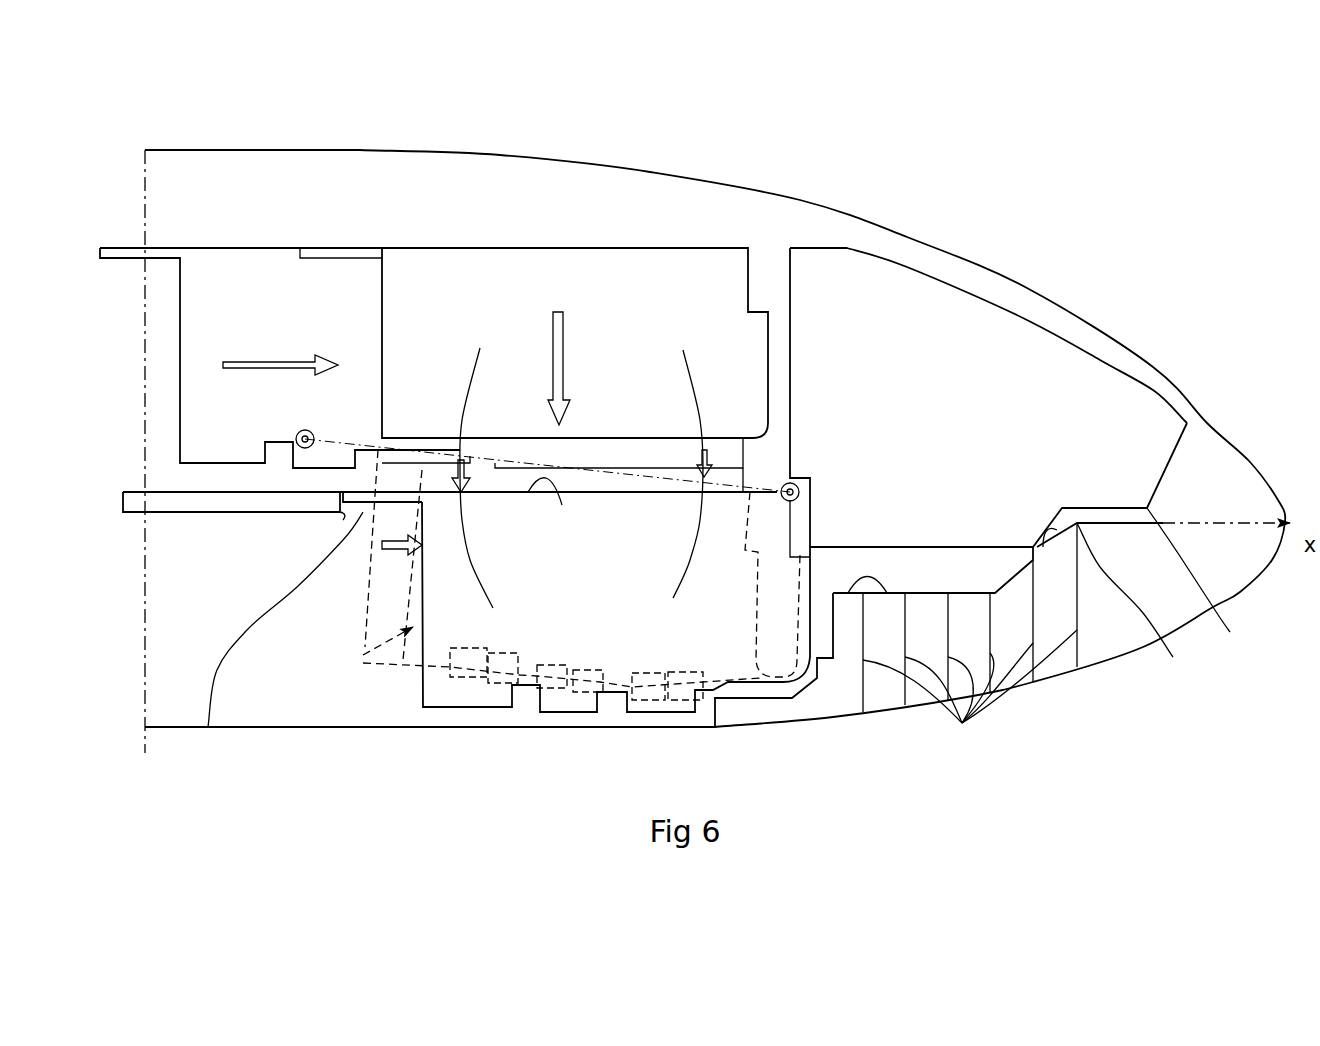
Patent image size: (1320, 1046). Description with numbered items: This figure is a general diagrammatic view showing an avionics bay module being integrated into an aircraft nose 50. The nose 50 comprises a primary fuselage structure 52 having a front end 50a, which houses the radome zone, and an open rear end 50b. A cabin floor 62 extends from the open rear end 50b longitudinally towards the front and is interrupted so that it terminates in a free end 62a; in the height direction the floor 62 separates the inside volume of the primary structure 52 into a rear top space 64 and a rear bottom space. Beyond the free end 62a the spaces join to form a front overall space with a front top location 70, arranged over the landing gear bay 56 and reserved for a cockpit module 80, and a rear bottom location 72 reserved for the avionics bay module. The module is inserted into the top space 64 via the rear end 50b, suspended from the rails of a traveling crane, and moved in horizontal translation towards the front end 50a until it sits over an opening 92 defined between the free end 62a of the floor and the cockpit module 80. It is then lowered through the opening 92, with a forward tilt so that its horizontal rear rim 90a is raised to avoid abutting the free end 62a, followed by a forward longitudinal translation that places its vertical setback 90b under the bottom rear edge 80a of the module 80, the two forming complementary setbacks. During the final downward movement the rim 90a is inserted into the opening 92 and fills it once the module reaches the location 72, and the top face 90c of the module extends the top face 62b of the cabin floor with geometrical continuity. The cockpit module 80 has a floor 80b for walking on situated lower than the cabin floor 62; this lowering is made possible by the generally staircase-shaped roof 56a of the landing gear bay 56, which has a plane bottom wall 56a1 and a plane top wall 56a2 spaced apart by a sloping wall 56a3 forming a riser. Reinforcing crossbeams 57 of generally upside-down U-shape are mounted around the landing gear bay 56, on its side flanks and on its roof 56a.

The aircraft nose 50 is at (980, 237).
The front end 50a is at (1243, 425).
The open rear end 50b is at (143, 170).
The primary fuselage structure 52 is at (755, 218).
The landing gear bay 56 is at (1090, 617).
The roof of the landing gear bay 56a is at (985, 580).
The bottom wall 56a1 is at (848, 595).
The top wall 56a2 is at (1205, 583).
The sloping wall 56a3 is at (1142, 606).
The reinforcing crossbeams 57 is at (970, 693).
The cabin floor 62 is at (177, 503).
The free end of the cabin floor 62a is at (343, 516).
The top face of the cabin floor 62b is at (237, 500).
The rear top space 64 is at (392, 187).
The front top location 70 is at (1113, 360).
The rear bottom location 72 is at (407, 680).
The cockpit module 80 is at (1000, 337).
The bottom rear edge 80a is at (820, 483).
The floor for walking on 80b is at (948, 547).
The horizontal rim 90a is at (300, 430).
The vertical setback 90b is at (787, 537).
The top face of the module 90c is at (562, 505).
The opening 92 is at (208, 727).